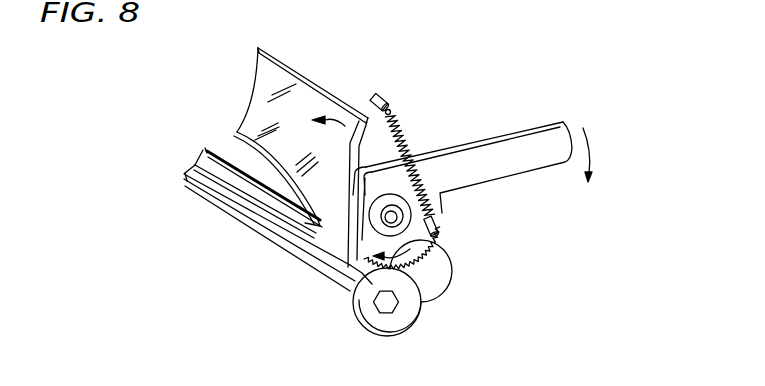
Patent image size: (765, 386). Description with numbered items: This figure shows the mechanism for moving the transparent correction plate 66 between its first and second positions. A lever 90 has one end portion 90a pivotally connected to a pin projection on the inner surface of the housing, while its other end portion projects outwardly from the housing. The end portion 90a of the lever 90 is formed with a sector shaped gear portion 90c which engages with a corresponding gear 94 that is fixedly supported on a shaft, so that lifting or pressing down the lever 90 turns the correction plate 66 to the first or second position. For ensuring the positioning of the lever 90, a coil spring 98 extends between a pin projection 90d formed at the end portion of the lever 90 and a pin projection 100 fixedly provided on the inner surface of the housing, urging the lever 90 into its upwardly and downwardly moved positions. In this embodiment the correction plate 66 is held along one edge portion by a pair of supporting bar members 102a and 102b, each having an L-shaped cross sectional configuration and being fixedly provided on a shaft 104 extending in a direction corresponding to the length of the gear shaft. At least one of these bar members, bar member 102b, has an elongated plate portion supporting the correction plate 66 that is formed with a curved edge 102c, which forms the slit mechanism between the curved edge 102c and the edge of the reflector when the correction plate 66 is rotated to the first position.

The transparent correction plate 66 is at (272, 82).
The lever 90 is at (510, 167).
The one end portion of the lever 90a is at (383, 178).
The sector shaped gear portion 90c is at (422, 252).
The pin projection 90d is at (447, 226).
The gear 94 is at (403, 309).
The coil spring 98 is at (431, 188).
The pin projection 100 is at (396, 128).
The supporting bar member 102a is at (225, 175).
The supporting bar member 102b is at (238, 213).
The curved edge 102c is at (233, 130).
The shaft 104 is at (322, 252).